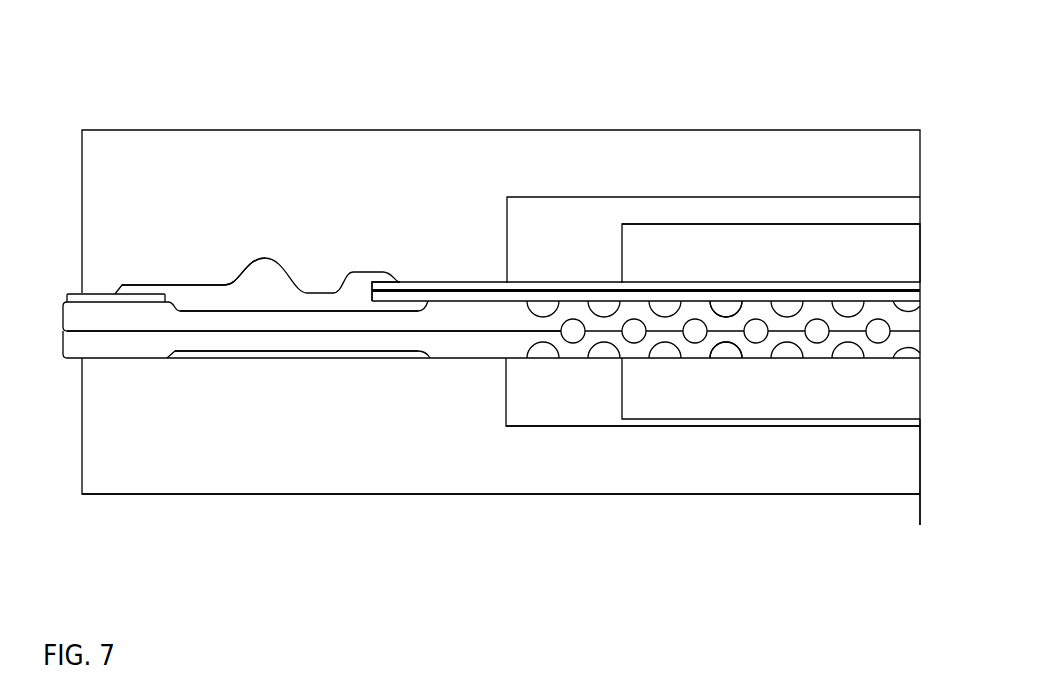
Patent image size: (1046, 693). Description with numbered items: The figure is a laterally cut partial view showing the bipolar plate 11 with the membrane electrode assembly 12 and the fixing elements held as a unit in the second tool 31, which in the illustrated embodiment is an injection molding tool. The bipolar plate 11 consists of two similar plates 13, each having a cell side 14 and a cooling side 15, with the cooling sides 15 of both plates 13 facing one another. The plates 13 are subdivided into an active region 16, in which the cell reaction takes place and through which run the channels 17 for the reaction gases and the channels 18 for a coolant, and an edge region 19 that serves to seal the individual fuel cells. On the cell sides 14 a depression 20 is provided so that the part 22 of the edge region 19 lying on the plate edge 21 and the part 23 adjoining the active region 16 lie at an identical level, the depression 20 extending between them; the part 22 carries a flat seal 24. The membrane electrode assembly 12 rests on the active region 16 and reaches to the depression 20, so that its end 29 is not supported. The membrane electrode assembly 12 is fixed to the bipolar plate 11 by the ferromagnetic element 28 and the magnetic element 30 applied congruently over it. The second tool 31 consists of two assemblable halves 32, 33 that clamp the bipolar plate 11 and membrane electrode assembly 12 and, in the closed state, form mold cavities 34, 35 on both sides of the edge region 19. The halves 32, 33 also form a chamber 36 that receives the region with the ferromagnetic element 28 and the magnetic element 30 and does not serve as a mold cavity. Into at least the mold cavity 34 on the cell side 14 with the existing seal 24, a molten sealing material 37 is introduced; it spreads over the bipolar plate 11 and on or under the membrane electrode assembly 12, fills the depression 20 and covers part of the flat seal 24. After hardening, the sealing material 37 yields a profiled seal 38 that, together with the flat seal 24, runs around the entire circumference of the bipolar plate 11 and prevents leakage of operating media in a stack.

The bipolar plate 11 is at (445, 343).
The membrane electrode assembly 12 is at (598, 288).
The plate 13 is at (371, 323).
The cell side 14 is at (697, 355).
The cooling side 15 is at (503, 333).
The active region 16 is at (729, 236).
The channels for reaction gases 17 is at (668, 310).
The channels for coolant 18 is at (636, 332).
The edge region 19 is at (193, 227).
The depression 20 is at (267, 312).
The plate edge 21 is at (72, 296).
The part of the edge region lying on the plate edge 22 is at (133, 313).
The part of the edge region adjoining the active region 23 is at (467, 313).
The flat seal 24 is at (90, 296).
The ferromagnetic element 28 is at (833, 398).
The end of the MEA 29 is at (385, 287).
The magnetic element 30 is at (872, 248).
The second tool 31 is at (778, 478).
The tool half 32 is at (847, 148).
The tool half 33 is at (887, 465).
The mold cavity 34 is at (262, 273).
The mold cavity 35 is at (306, 322).
The chamber 36 is at (568, 230).
The sealing material 37 is at (217, 302).
The seal 38 is at (245, 271).